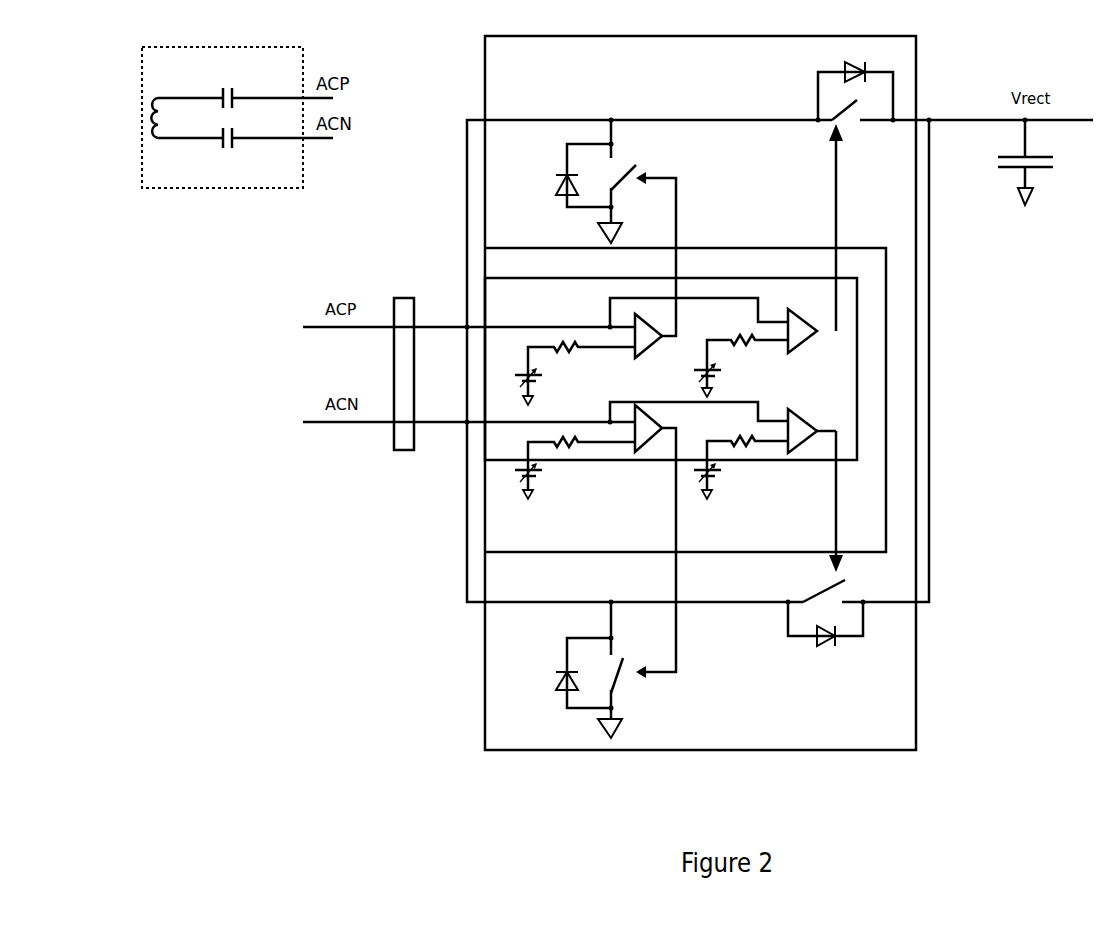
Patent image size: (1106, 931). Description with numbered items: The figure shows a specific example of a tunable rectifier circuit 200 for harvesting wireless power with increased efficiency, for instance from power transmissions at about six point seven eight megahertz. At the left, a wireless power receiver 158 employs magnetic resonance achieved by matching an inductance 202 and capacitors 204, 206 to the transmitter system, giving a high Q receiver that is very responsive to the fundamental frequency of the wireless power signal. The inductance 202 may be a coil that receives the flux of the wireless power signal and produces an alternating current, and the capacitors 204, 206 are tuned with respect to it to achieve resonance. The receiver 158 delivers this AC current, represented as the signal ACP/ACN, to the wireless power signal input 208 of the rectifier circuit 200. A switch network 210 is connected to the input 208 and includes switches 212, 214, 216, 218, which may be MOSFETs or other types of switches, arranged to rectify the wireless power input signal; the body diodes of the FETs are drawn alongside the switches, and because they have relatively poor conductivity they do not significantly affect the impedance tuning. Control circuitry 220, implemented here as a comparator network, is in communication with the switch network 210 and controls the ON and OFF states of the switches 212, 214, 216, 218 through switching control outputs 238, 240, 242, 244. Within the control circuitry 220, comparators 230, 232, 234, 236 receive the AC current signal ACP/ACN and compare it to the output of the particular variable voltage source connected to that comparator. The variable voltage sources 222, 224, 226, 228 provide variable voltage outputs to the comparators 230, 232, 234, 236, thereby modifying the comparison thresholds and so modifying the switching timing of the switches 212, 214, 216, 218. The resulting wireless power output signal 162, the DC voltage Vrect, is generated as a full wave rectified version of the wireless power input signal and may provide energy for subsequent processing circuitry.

The wireless power receiver 158 is at (182, 73).
The wireless power output signal 162 is at (1056, 123).
The tunable rectifier circuit 200 is at (386, 44).
The inductance 202 is at (160, 140).
The capacitance 204 is at (234, 93).
The capacitance 206 is at (234, 147).
The wireless power signal input 208 is at (405, 452).
The switch network 210 is at (524, 62).
The switch 212 is at (624, 194).
The switch 214 is at (856, 146).
The switch 216 is at (856, 586).
The switch 218 is at (625, 699).
The control circuitry 220 is at (524, 303).
The variable voltage source 222 is at (542, 379).
The variable voltage source 224 is at (720, 374).
The variable voltage source 226 is at (542, 474).
The variable voltage source 228 is at (720, 474).
The comparator 230 is at (651, 347).
The comparator 232 is at (807, 340).
The comparator 234 is at (651, 422).
The comparator 236 is at (807, 425).
The switching control output 238 is at (676, 222).
The switching control output 240 is at (836, 206).
The switching control output 242 is at (676, 525).
The switching control output 244 is at (836, 494).